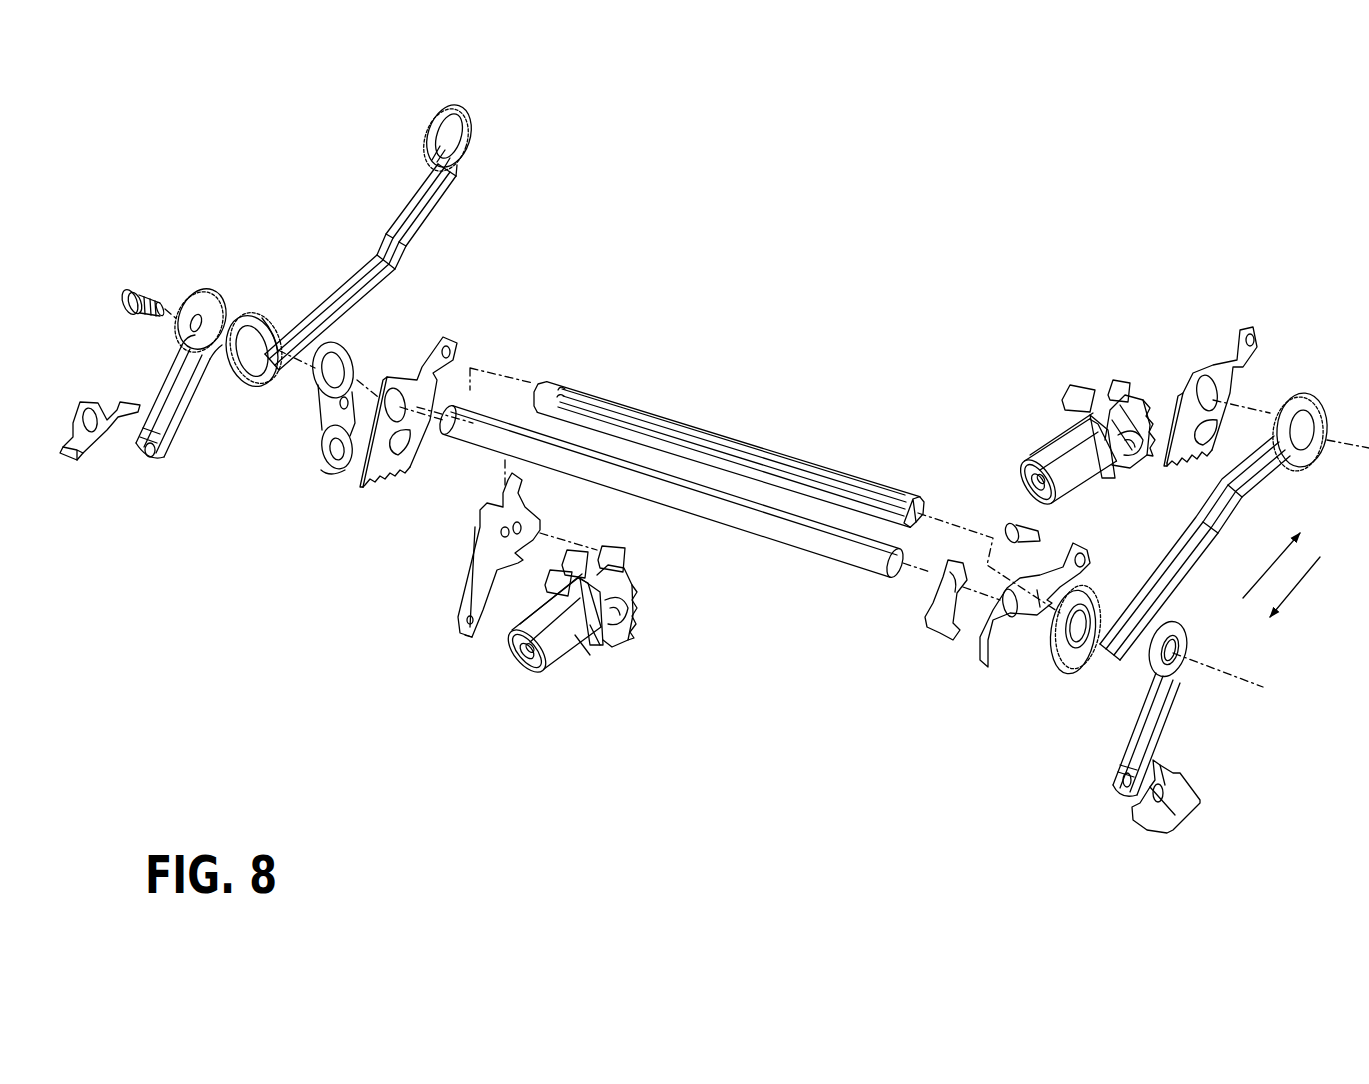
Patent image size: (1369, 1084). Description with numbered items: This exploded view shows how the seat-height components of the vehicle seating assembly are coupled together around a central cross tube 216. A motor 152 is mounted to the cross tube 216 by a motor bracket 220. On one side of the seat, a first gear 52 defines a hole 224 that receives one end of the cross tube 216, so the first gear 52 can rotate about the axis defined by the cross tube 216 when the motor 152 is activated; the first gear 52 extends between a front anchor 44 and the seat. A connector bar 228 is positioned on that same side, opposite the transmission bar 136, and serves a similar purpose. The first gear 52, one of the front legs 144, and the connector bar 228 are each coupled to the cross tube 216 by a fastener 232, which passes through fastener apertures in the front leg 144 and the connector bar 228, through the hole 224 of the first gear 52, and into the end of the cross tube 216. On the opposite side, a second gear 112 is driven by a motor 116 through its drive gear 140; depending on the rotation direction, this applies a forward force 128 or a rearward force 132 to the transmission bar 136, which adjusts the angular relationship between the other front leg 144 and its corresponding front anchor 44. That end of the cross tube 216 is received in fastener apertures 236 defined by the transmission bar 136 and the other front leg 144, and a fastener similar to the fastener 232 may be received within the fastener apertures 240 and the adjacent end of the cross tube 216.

The front anchor 44 is at (102, 412).
The first gear 52 is at (355, 472).
The second gear 112 is at (1203, 363).
The motor 116 is at (1040, 440).
The forward force 128 is at (1300, 578).
The rearward force 132 is at (1270, 557).
The transmission bar 136 is at (1180, 591).
The drive gear 140 is at (1148, 433).
The front leg 144 is at (140, 463).
The motor 152 is at (558, 673).
The cross tube 216 is at (748, 518).
The motor bracket 220 is at (457, 610).
The hole 224 is at (413, 375).
The connector bar 228 is at (343, 268).
The fastener 232 is at (133, 288).
The fastener apertures 236 is at (257, 340).
The fastener apertures 240 is at (1162, 658).